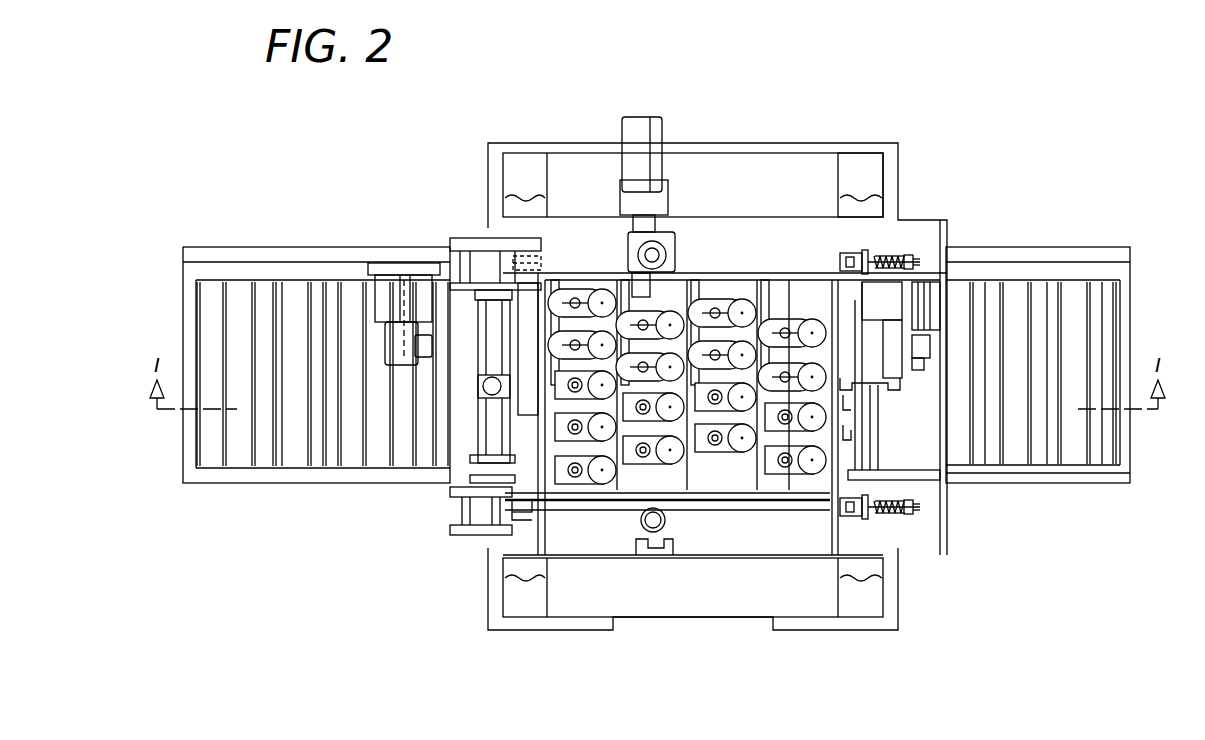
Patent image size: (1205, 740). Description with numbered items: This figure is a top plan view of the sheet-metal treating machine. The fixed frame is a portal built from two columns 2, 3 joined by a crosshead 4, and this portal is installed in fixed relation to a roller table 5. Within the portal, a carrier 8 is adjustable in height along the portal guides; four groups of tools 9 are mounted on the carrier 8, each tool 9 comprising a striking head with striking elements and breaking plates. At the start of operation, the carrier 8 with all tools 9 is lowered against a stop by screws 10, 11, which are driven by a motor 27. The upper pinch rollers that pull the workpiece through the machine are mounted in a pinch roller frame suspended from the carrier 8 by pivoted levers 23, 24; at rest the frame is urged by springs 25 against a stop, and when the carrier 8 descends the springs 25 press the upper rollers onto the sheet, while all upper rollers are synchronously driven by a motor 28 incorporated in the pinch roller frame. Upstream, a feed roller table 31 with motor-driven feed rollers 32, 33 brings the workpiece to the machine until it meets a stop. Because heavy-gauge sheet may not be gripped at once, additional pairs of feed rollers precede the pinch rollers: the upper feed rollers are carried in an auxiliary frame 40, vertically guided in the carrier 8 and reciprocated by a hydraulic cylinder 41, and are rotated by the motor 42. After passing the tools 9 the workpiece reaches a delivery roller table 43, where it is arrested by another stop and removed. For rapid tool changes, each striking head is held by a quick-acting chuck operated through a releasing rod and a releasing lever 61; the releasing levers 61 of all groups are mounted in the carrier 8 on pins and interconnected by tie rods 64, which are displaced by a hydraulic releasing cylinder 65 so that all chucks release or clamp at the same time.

The column 2 is at (786, 177).
The column 3 is at (628, 590).
The crosshead 4 is at (870, 172).
The roller table 5 is at (789, 290).
The carrier 8 is at (750, 482).
The tools 9 is at (660, 458).
The screw 10 is at (650, 250).
The screw 11 is at (655, 527).
The pivoted lever 23 is at (497, 243).
The pivoted lever 24 is at (858, 262).
The springs 25 is at (897, 262).
The motor 27 is at (637, 152).
The motor 28 is at (921, 340).
The feed roller table 31 is at (243, 300).
The feed roller 32 is at (215, 458).
The feed roller 33 is at (272, 458).
The auxiliary frame 40 is at (490, 432).
The hydraulic cylinder 41 is at (490, 392).
The motor 42 is at (400, 300).
The delivery roller table 43 is at (1122, 448).
The releasing lever 61 is at (784, 326).
The tie rods 64 is at (716, 305).
The hydraulic releasing cylinder 65 is at (870, 388).